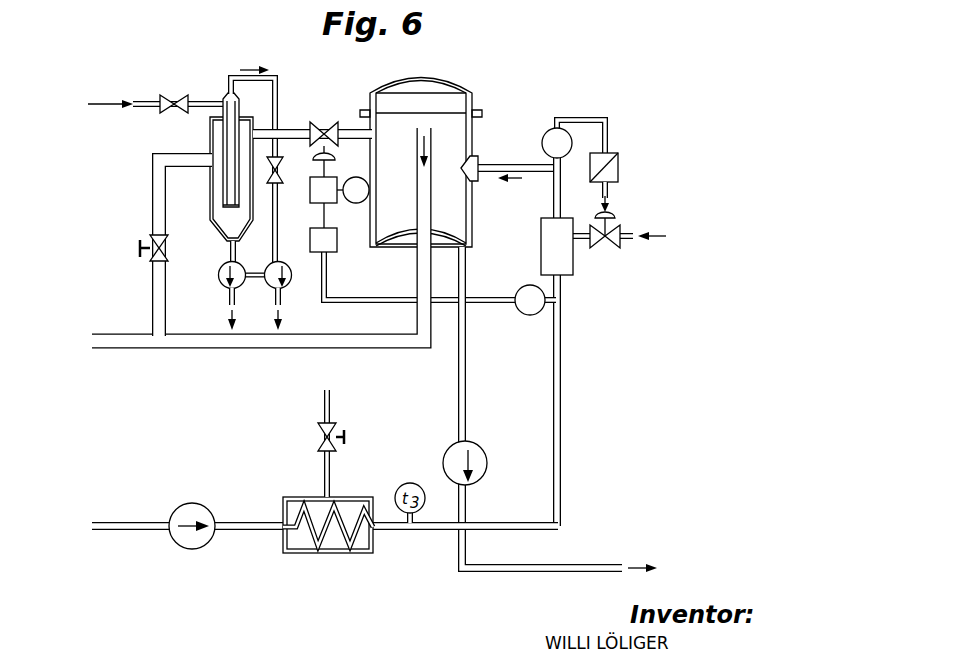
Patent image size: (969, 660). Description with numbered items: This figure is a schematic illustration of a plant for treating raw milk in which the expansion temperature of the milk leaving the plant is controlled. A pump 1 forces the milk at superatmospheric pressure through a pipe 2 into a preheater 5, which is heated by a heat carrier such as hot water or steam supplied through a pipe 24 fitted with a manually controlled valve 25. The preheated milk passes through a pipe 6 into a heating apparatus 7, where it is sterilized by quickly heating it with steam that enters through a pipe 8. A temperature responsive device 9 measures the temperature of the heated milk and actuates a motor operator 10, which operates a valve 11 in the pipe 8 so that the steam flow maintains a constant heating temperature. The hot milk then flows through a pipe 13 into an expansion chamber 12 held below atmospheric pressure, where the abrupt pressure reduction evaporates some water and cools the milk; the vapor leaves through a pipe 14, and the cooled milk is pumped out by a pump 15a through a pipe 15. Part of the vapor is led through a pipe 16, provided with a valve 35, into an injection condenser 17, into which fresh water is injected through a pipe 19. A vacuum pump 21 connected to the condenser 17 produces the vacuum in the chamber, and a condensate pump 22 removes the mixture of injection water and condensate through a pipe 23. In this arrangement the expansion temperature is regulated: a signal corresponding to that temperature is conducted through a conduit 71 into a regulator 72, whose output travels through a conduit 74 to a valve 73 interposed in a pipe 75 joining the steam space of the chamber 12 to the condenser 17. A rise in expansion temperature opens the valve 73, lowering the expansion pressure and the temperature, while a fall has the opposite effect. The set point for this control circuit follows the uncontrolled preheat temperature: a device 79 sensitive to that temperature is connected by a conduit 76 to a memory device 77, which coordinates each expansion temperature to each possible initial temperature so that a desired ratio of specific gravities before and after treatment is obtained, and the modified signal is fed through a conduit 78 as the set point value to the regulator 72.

The pump 1 is at (187, 503).
The pipe 2 is at (241, 531).
The preheater 5 is at (328, 555).
The pipe 6 is at (562, 386).
The heating apparatus 7 is at (540, 240).
The pipe 8 is at (632, 241).
The temperature responsive device 9 is at (548, 129).
The motor operator 10 is at (619, 166).
The valve 11 is at (616, 226).
The expansion chamber 12 is at (466, 83).
The pipe 13 is at (505, 163).
The pipe 14 is at (422, 271).
The pipe 15 is at (458, 404).
The pump 15a is at (482, 453).
The pipe 16 is at (152, 199).
The condenser 17 is at (211, 137).
The pipe 19 is at (152, 101).
The vacuum pump 21 is at (276, 294).
The condensate pump 22 is at (219, 278).
The pipe 23 is at (229, 297).
The pipe 24 is at (324, 397).
The control valve 25 is at (320, 432).
The valve 35 is at (150, 260).
The conduit 71 is at (354, 203).
The regulator 72 is at (332, 184).
The valve 73 is at (320, 127).
The conduit 74 is at (322, 171).
The pipe 75 is at (300, 129).
The conduit 76 is at (328, 293).
The memory device 77 is at (336, 243).
The conduit 78 is at (322, 216).
The device sensitive to the temperature 79 is at (530, 316).